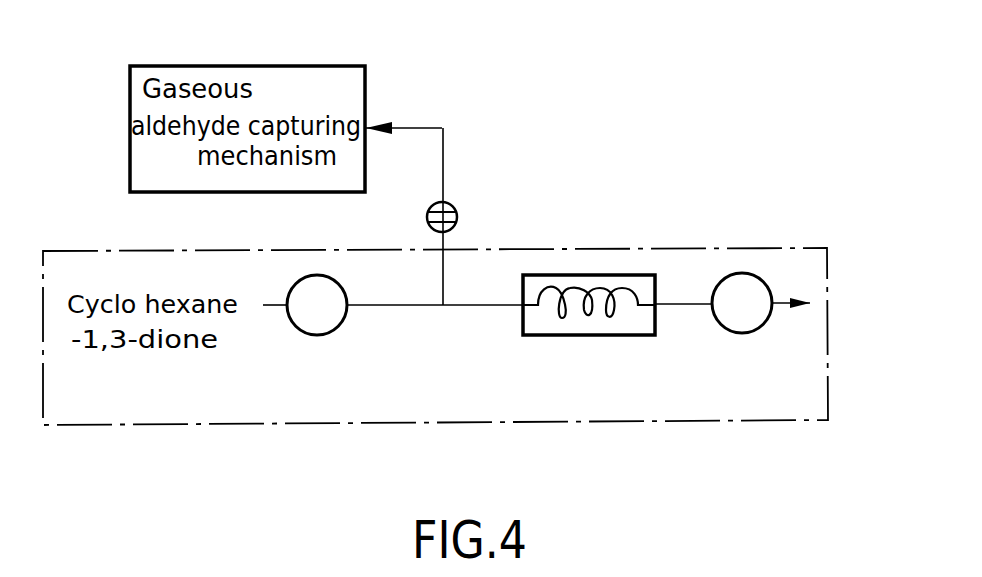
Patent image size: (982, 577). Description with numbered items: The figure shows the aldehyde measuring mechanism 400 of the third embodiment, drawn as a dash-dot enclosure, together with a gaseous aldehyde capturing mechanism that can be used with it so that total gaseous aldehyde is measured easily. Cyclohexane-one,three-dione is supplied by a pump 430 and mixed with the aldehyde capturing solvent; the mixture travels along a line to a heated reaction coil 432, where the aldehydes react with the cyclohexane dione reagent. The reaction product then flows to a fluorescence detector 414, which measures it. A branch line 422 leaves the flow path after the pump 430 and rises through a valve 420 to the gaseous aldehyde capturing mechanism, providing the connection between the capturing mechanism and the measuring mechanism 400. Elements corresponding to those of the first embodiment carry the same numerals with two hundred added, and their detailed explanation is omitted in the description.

The aldehyde measuring mechanism 400 is at (748, 422).
The fluorescence detector 414 is at (742, 334).
The valve 420 is at (458, 216).
The branch line 422 is at (443, 280).
The pump 430 is at (338, 327).
The heated reaction coil 432 is at (585, 336).